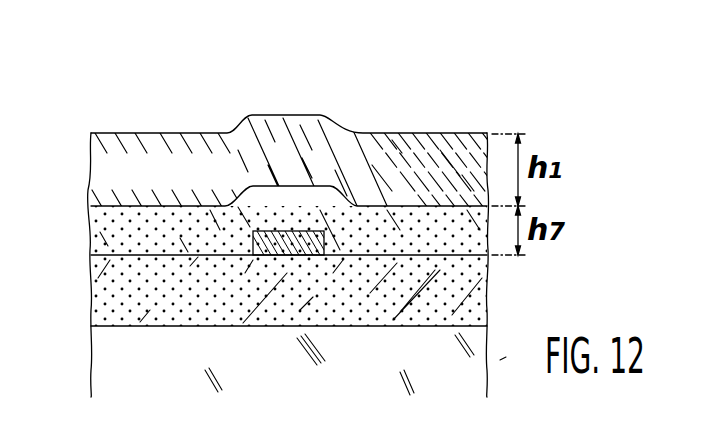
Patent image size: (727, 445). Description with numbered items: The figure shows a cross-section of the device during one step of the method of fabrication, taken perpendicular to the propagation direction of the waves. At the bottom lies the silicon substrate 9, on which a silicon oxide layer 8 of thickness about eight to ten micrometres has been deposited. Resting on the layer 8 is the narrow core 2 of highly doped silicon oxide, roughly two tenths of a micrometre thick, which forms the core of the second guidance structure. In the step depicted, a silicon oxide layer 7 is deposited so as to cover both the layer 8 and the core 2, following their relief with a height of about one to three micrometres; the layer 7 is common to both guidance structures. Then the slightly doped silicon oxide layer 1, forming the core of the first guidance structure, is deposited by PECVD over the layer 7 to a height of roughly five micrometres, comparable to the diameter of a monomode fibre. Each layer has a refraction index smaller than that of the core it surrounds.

The slightly doped silicon oxide layer 1 is at (95, 144).
The silicon oxide layer 7 is at (92, 212).
The silicon oxide layer 8 is at (90, 275).
The substrate 9 is at (95, 347).
The core 2 is at (300, 243).